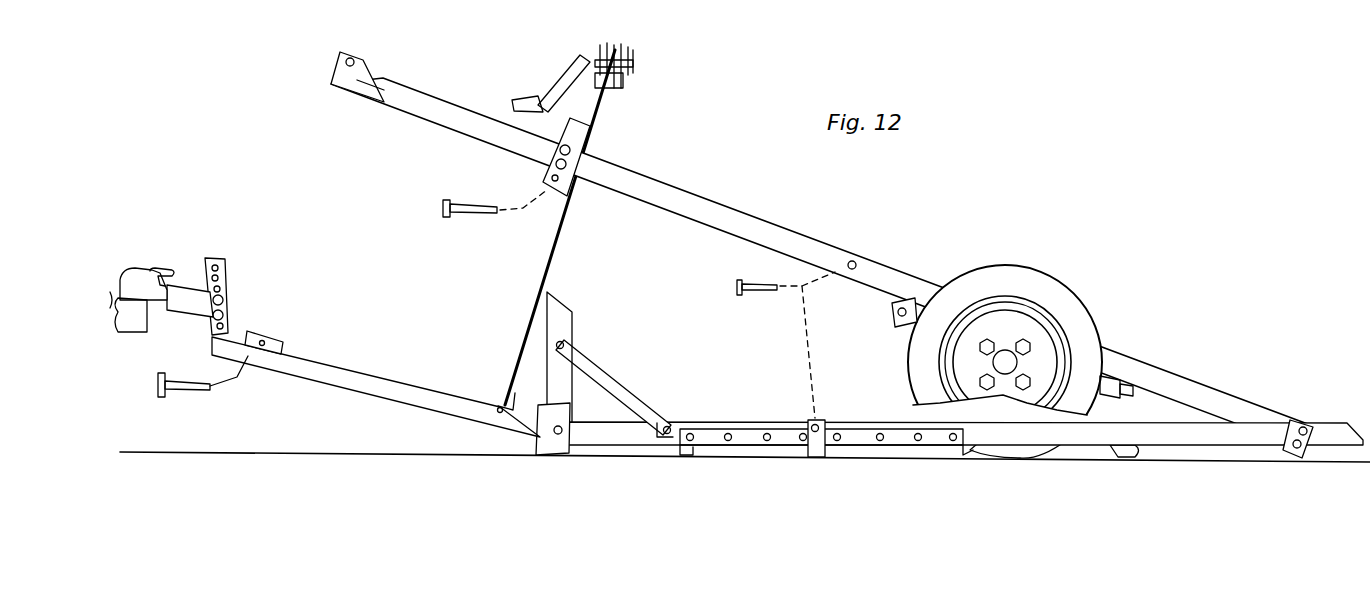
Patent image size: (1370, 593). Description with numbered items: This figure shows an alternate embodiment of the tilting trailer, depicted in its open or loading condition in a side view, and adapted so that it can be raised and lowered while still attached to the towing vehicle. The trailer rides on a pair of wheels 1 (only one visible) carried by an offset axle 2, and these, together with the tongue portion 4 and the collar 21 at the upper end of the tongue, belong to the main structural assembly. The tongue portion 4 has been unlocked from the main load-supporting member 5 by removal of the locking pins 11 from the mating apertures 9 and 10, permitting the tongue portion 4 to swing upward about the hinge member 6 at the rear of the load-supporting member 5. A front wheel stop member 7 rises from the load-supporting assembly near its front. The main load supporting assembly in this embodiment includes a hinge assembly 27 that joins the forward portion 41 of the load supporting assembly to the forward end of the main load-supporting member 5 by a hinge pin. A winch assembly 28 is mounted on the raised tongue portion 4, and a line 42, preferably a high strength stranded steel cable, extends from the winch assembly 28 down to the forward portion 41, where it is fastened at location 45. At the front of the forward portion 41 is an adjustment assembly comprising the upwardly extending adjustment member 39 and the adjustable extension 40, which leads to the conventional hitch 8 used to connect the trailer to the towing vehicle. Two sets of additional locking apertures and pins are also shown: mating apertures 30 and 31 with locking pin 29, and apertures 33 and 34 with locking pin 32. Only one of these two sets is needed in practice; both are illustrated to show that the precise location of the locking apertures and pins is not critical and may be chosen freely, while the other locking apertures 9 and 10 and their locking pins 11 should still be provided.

The wheel 1 is at (1062, 290).
The offset axle 2 is at (1128, 460).
The tongue portion 4 is at (731, 218).
The main load-supporting member 5 is at (1210, 436).
The hinge member 6 is at (1300, 458).
The front wheel stop member 7 is at (565, 325).
The hitch 8 is at (133, 272).
The aperture 9 is at (812, 428).
The aperture 10 is at (852, 260).
The locking pin 11 is at (735, 288).
The collar 21 is at (372, 82).
The hinge assembly 27 is at (558, 434).
The winch assembly 28 is at (625, 85).
The locking pin 29 is at (467, 215).
The aperture 30 is at (508, 421).
The aperture 31 is at (543, 172).
The locking pin 32 is at (186, 391).
The aperture 33 is at (262, 340).
The aperture 34 is at (350, 58).
The upwardly extending adjustment member 39 is at (226, 268).
The adjustable extension 40 is at (185, 305).
The forward portion 41 is at (367, 375).
The line 42 is at (562, 238).
The location 45 is at (500, 405).